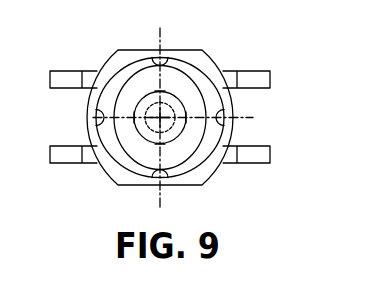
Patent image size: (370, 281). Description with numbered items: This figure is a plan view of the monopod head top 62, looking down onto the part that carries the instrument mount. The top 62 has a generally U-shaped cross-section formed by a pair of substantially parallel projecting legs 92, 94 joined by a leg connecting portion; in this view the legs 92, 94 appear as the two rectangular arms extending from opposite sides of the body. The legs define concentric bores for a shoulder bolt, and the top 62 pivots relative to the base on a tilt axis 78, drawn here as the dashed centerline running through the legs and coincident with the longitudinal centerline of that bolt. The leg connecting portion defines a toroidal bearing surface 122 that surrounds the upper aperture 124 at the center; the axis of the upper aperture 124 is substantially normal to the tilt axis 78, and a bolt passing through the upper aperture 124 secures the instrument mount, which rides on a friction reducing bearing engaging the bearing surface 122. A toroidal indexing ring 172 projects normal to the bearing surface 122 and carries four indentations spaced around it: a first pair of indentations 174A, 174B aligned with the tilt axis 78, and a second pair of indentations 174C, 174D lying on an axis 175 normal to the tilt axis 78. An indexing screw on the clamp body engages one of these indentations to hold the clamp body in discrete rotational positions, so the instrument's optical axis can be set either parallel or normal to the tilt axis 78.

The top 62 is at (305, 51).
The tilt axis 78 is at (165, 192).
The projecting leg 92 is at (223, 71).
The projecting leg 94 is at (253, 166).
The toroidal bearing surface 122 is at (119, 47).
The upper aperture 124 is at (169, 106).
The toroidal indexing ring 172 is at (120, 168).
The indentation 174A is at (157, 49).
The indentation 174B is at (156, 190).
The indentation 174C is at (231, 122).
The indentation 174D is at (90, 120).
The axis 175 is at (237, 115).